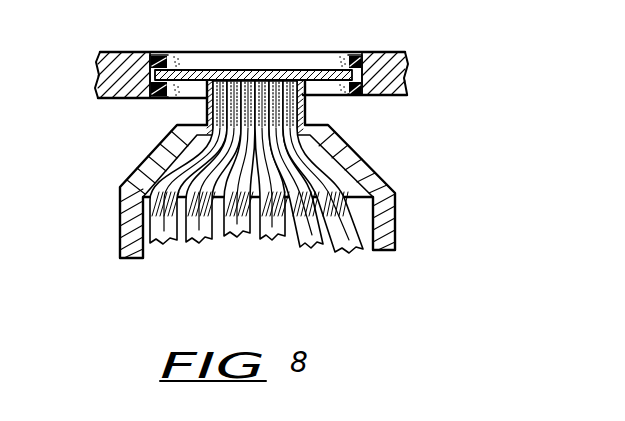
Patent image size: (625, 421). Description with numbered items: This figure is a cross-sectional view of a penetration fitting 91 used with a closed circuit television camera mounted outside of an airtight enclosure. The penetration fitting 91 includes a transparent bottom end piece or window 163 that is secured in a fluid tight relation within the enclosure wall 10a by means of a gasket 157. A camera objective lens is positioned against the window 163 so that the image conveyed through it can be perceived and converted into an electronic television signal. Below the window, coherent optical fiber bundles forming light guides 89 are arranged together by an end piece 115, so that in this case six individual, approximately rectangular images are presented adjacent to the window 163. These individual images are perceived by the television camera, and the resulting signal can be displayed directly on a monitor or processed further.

The enclosure wall 10a is at (393, 52).
The gasket 157 is at (148, 55).
The window 163 is at (288, 53).
The end piece 115 is at (396, 208).
The light guides 89 is at (228, 231).
The penetration fitting 91 is at (247, 186).